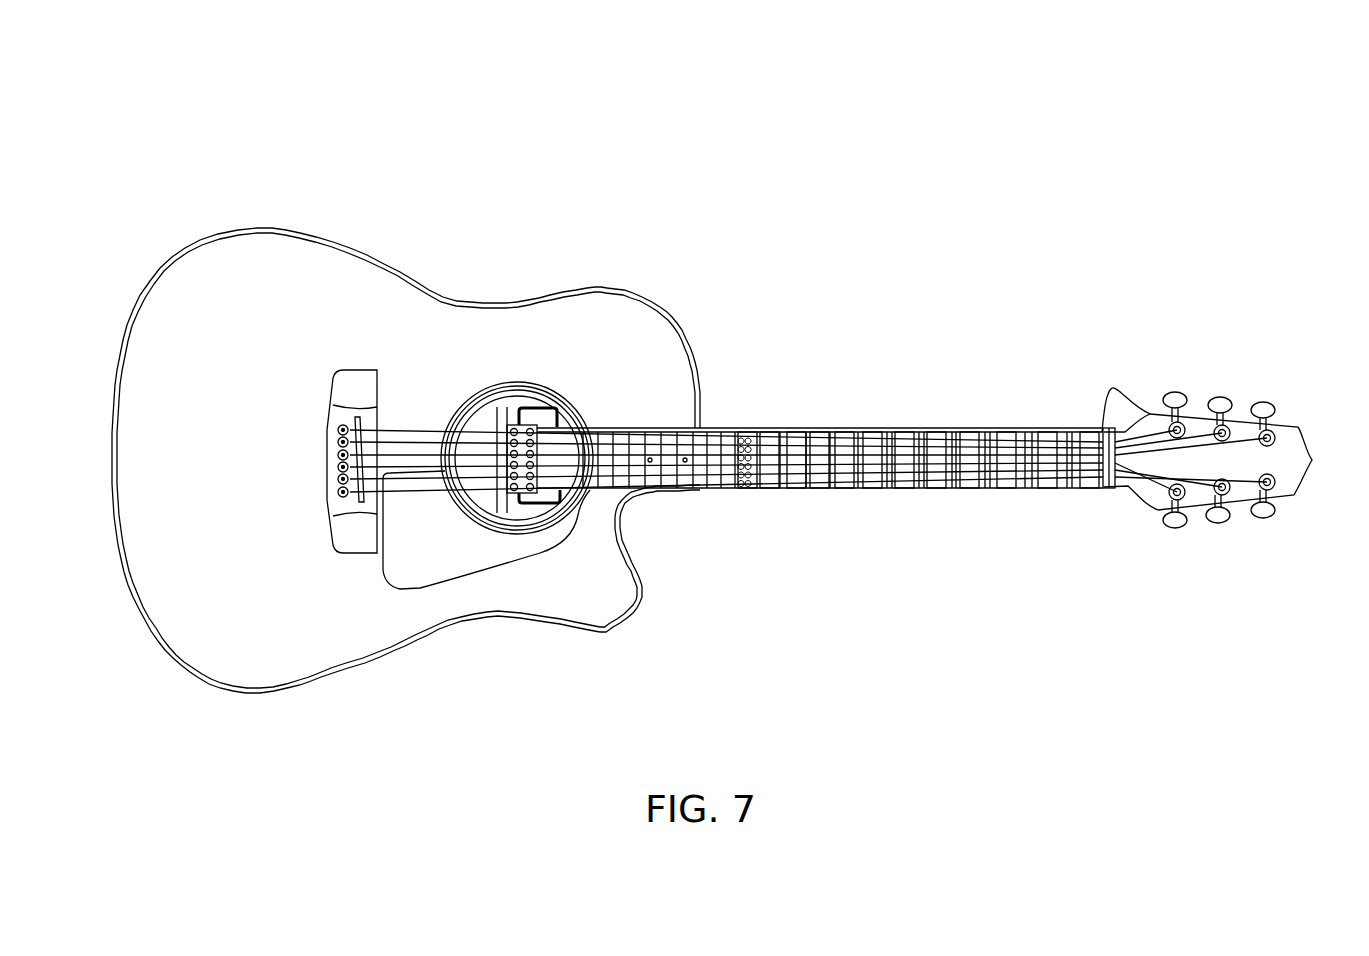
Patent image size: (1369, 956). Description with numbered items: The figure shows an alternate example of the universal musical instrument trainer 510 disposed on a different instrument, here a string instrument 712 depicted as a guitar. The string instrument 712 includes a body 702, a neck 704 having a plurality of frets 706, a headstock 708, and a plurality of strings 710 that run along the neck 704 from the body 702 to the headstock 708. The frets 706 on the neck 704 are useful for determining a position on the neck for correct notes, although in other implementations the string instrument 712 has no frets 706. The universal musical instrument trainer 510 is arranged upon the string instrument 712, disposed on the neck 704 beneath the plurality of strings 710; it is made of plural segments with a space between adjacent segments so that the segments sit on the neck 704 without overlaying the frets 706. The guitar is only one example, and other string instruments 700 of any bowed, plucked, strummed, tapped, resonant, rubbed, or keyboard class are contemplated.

The string instruments 700 is at (1230, 77).
The body 702 is at (110, 420).
The neck 704 is at (855, 428).
The frets 706 is at (853, 524).
The headstock 708 is at (1292, 420).
The strings 710 is at (470, 396).
The string instrument 712 is at (583, 198).
The universal musical instrument trainer 510 is at (953, 398).